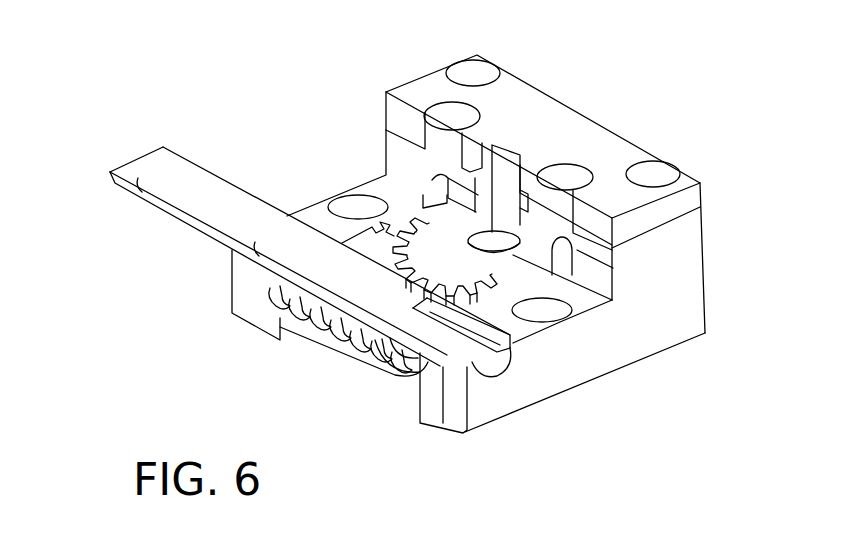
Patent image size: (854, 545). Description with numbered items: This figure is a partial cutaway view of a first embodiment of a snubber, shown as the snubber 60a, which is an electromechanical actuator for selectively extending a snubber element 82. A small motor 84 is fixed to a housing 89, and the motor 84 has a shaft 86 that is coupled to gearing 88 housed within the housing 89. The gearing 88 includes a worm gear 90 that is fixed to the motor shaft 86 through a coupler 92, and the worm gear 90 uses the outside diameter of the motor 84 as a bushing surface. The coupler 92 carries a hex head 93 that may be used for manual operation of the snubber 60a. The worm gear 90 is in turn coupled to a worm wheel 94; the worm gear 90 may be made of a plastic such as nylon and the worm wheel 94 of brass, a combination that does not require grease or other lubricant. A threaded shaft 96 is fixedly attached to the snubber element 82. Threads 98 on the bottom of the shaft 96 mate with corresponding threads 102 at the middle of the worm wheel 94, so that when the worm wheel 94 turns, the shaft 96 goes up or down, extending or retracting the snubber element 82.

The snubber 60a is at (179, 102).
The snubber element 82 is at (533, 102).
The motor 84 is at (188, 195).
The shaft 86 is at (403, 343).
The gearing 88 is at (351, 190).
The housing 89 is at (600, 355).
The worm gear 90 is at (327, 340).
The coupler 92 is at (440, 342).
The hex head 93 is at (492, 362).
The worm wheel 94 is at (497, 340).
The threaded shaft 96 is at (493, 170).
The threads 98 is at (613, 242).
The threads 102 is at (565, 300).